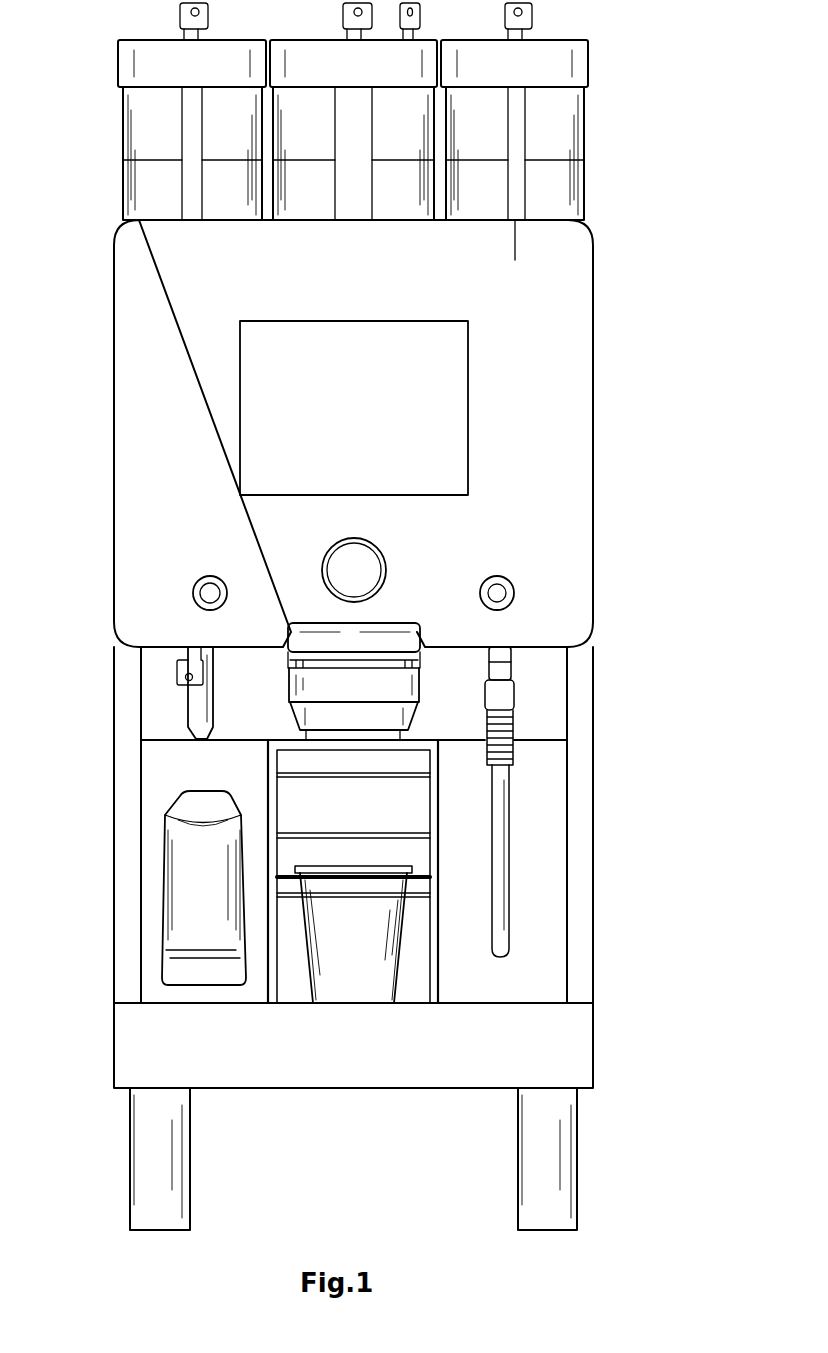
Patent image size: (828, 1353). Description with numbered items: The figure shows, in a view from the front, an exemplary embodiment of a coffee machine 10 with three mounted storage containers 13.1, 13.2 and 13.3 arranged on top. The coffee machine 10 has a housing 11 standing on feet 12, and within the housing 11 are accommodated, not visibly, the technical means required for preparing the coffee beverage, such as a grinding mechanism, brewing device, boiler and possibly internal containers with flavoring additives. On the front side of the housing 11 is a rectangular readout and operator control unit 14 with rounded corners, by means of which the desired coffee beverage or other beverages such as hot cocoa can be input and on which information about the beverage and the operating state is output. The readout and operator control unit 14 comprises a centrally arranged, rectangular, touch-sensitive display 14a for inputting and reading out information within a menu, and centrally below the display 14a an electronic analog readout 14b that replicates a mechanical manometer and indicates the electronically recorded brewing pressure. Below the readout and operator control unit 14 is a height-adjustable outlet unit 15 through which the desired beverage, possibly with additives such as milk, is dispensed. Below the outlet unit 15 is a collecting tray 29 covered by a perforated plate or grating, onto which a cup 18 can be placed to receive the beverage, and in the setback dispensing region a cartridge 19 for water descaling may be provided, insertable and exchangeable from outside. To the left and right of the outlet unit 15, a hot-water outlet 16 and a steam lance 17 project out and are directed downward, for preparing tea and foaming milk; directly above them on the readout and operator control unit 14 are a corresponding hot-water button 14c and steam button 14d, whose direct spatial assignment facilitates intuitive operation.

The coffee machine 10 is at (666, 300).
The housing 11 is at (585, 822).
The feet 12 is at (162, 1160).
The storage container 13.1 is at (177, 152).
The storage container 13.2 is at (360, 178).
The storage container 13.3 is at (538, 147).
The readout and operator control unit 14 is at (140, 289).
The touch-sensitive display 14a is at (297, 438).
The electronic analog readout 14b is at (354, 565).
The hot-water button 14c is at (209, 592).
The steam button 14d is at (497, 593).
The outlet unit 15 is at (372, 693).
The hot-water outlet 16 is at (196, 705).
The steam lance 17 is at (500, 722).
The cup 18 is at (387, 928).
The cartridge 19 is at (182, 903).
The collecting tray 29 is at (145, 1040).